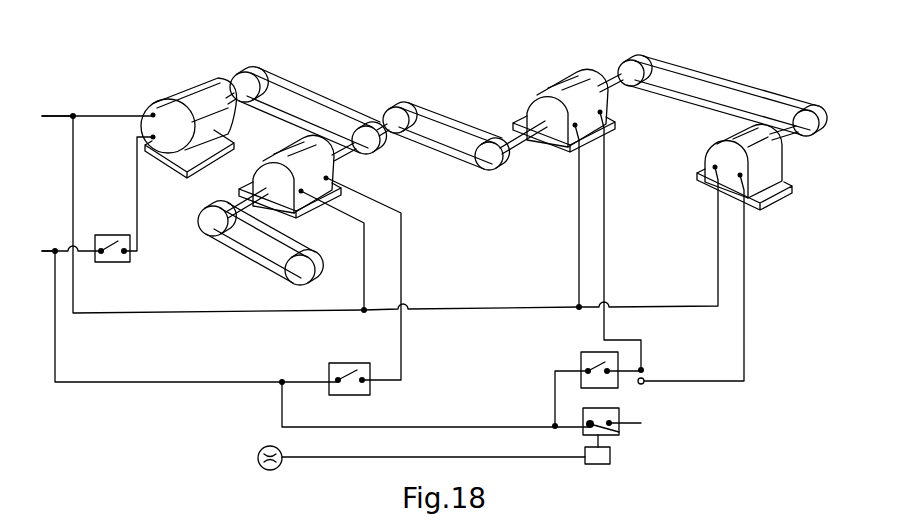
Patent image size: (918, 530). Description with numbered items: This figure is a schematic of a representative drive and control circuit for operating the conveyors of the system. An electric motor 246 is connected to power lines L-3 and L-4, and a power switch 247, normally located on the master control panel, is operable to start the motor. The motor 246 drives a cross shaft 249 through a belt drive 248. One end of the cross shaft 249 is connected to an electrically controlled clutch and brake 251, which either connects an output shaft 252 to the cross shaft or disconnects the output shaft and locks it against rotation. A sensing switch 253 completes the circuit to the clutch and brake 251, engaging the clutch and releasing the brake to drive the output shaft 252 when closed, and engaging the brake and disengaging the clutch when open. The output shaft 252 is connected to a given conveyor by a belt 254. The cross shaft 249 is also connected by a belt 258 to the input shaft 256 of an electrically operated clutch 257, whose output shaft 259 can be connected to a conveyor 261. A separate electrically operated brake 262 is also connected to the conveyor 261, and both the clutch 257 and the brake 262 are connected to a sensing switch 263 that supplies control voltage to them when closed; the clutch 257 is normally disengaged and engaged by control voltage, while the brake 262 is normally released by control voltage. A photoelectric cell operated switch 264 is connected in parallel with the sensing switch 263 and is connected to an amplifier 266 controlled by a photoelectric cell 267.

The electric motor 246 is at (197, 77).
The power switch 247 is at (116, 264).
The belt drive 248 is at (330, 99).
The cross shaft 249 is at (400, 146).
The clutch and brake 251 is at (292, 148).
The output shaft 252 is at (226, 203).
The sensing switch 253 is at (350, 362).
The belt 254 is at (254, 256).
The input shaft 256 is at (510, 151).
The electrically operated clutch 257 is at (567, 73).
The belt 258 is at (455, 166).
The output shaft 259 is at (610, 88).
The conveyor 261 is at (684, 74).
The electrically operated brake 262 is at (772, 162).
The sensing switch 263 is at (581, 357).
The photoelectric cell operated switch 264 is at (620, 424).
The amplifier 266 is at (610, 456).
The photoelectric cell 267 is at (263, 471).
The power line L-3 is at (57, 121).
The power line L-4 is at (47, 249).